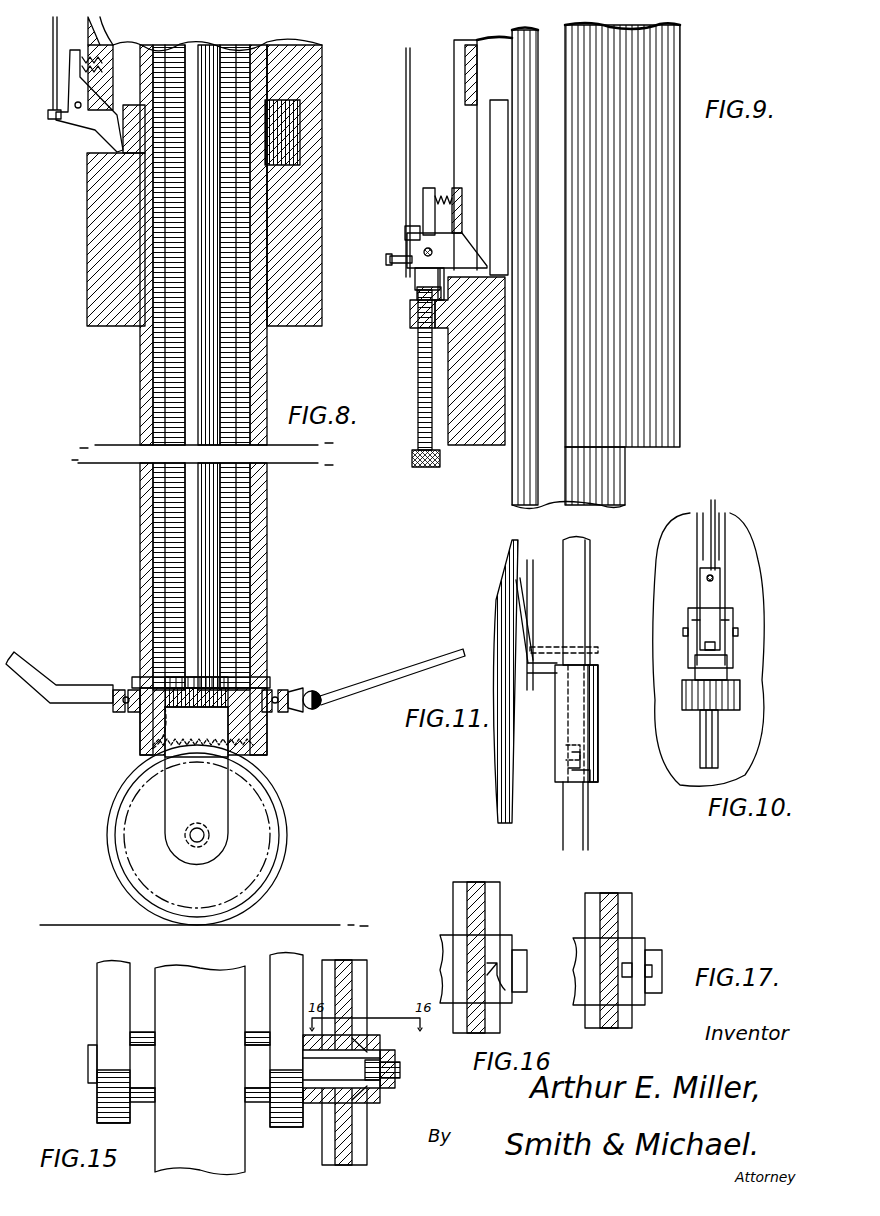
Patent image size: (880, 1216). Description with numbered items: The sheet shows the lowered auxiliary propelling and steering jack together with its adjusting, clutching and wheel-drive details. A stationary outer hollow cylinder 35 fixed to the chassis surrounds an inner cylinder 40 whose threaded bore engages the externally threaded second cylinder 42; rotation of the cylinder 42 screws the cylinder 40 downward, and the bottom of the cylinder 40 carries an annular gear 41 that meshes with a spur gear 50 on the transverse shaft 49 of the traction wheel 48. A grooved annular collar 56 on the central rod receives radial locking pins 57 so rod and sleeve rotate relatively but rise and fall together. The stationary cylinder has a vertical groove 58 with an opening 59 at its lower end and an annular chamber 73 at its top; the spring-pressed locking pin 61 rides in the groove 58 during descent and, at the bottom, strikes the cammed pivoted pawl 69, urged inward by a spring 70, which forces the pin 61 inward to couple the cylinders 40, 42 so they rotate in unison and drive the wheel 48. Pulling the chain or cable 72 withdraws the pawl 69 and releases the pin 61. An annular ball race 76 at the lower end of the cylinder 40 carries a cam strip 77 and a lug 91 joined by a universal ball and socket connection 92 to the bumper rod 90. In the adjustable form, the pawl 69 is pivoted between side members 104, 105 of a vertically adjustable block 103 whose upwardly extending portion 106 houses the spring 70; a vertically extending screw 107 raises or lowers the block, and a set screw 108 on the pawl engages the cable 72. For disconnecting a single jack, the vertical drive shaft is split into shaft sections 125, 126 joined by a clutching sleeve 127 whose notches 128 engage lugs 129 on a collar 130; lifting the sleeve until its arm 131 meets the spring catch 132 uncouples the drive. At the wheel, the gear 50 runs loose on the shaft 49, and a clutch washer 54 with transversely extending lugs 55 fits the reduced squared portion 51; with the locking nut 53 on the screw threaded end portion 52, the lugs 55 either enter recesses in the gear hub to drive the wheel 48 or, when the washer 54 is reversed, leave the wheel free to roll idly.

In FIG. 8, the outer hollow cylinder 35 is at (300, 190).
In FIG. 9, the outer hollow cylinder 35 is at (650, 165).
In FIG. 11, the outer hollow cylinder 35 is at (500, 612).
In FIG. 8, the inner cylinder 40 is at (141, 372).
In FIG. 9, the inner cylinder 40 is at (520, 480).
In FIG. 8, the annular gear 41 is at (258, 757).
In FIG. 8, the second cylinder 42 is at (150, 276).
In FIG. 8, the auxiliary propelling and steering wheel 48 is at (285, 806).
In FIG. 15, the auxiliary propelling and steering wheel 48 is at (200, 1070).
In FIG. 8, the transverse shaft 49 is at (190, 836).
In FIG. 15, the transverse shaft 49 is at (92, 1052).
In FIG. 8, the spur gear 50 is at (275, 837).
In FIG. 15, the spur gear 50 is at (340, 975).
In FIG. 16, the spur gear 50 is at (484, 906).
In FIG. 17, the spur gear 50 is at (618, 908).
In FIG. 15, the reduced squared portion 51 is at (380, 1090).
In FIG. 15, the screw threaded end portion 52 is at (402, 1072).
In FIG. 15, the locking nut 53 is at (385, 1055).
In FIG. 16, the locking nut 53 is at (520, 953).
In FIG. 17, the locking nut 53 is at (655, 953).
In FIG. 15, the clutch washer 54 is at (376, 1038).
In FIG. 16, the clutch washer 54 is at (505, 936).
In FIG. 17, the clutch washer 54 is at (640, 939).
In FIG. 15, the transversely extending lugs 55 is at (358, 1040).
In FIG. 16, the transversely extending lugs 55 is at (500, 992).
In FIG. 17, the transversely extending lugs 55 is at (652, 970).
In FIG. 8, the annular collar 56 is at (142, 742).
In FIG. 8, the radial locking pins 57 is at (268, 676).
In FIG. 8, the vertically extending groove 58 is at (140, 60).
In FIG. 9, the vertically extending groove 58 is at (497, 46).
In FIG. 8, the opening 59 is at (97, 150).
In FIG. 8, the locking pin 61 is at (87, 205).
In FIG. 8, the pivoted pawl 69 is at (95, 125).
In FIG. 9, the pivoted pawl 69 is at (447, 250).
In FIG. 10, the pivoted pawl 69 is at (718, 626).
In FIG. 8, the spring 70 is at (88, 58).
In FIG. 9, the spring 70 is at (441, 194).
In FIG. 10, the spring 70 is at (727, 570).
In FIG. 8, the chain or cable 72 is at (52, 45).
In FIG. 9, the chain or cable 72 is at (405, 155).
In FIG. 10, the chain or cable 72 is at (714, 540).
In FIG. 8, the annular chamber 73 is at (280, 128).
In FIG. 9, the annular chamber 73 is at (500, 153).
In FIG. 8, the annular ball race 76 is at (120, 713).
In FIG. 8, the cam strip 77 is at (90, 684).
In FIG. 8, the rod 90 is at (392, 671).
In FIG. 8, the lug 91 is at (295, 713).
In FIG. 8, the universal ball and socket connection 92 is at (316, 708).
In FIG. 9, the vertically adjustable block 103 is at (415, 277).
In FIG. 10, the vertically adjustable block 103 is at (718, 662).
In FIG. 10, the side member 104 is at (738, 648).
In FIG. 9, the side member 105 is at (418, 231).
In FIG. 10, the side member 105 is at (690, 650).
In FIG. 9, the upwardly extending portion 106 is at (428, 215).
In FIG. 10, the upwardly extending portion 106 is at (718, 592).
In FIG. 9, the vertically extending screw 107 is at (420, 372).
In FIG. 10, the vertically extending screw 107 is at (712, 746).
In FIG. 9, the set screw 108 is at (388, 260).
In FIG. 10, the set screw 108 is at (707, 652).
In FIG. 11, the shaft section 125 is at (580, 568).
In FIG. 11, the shaft section 126 is at (580, 815).
In FIG. 11, the clutching sleeve 127 is at (560, 720).
In FIG. 11, the notches 128 is at (568, 748).
In FIG. 11, the lugs 129 is at (585, 762).
In FIG. 11, the collar 130 is at (580, 778).
In FIG. 11, the arm 131 is at (545, 680).
In FIG. 11, the spring catch 132 is at (532, 654).